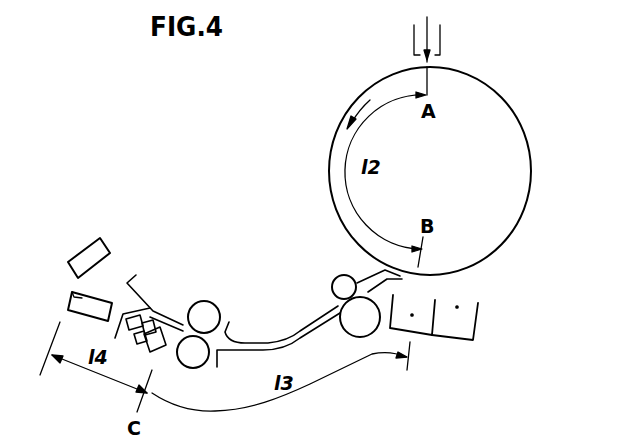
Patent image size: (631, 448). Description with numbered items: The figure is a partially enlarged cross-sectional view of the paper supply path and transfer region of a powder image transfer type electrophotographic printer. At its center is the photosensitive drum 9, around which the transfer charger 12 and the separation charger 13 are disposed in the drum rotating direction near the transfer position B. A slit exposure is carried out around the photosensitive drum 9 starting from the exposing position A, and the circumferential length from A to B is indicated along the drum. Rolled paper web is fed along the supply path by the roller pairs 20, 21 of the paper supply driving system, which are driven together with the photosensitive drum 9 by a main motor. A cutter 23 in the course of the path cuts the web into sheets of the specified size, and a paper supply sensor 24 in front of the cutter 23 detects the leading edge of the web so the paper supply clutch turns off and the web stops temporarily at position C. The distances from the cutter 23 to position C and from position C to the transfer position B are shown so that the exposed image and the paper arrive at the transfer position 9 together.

The photosensitive drum 9 is at (488, 108).
The transfer charger 12 is at (422, 335).
The separation charger 13 is at (462, 342).
The roller pair 20 is at (204, 300).
The roller pair 21 is at (333, 278).
The cutter 23 is at (70, 281).
The paper supply sensor 24 is at (167, 308).